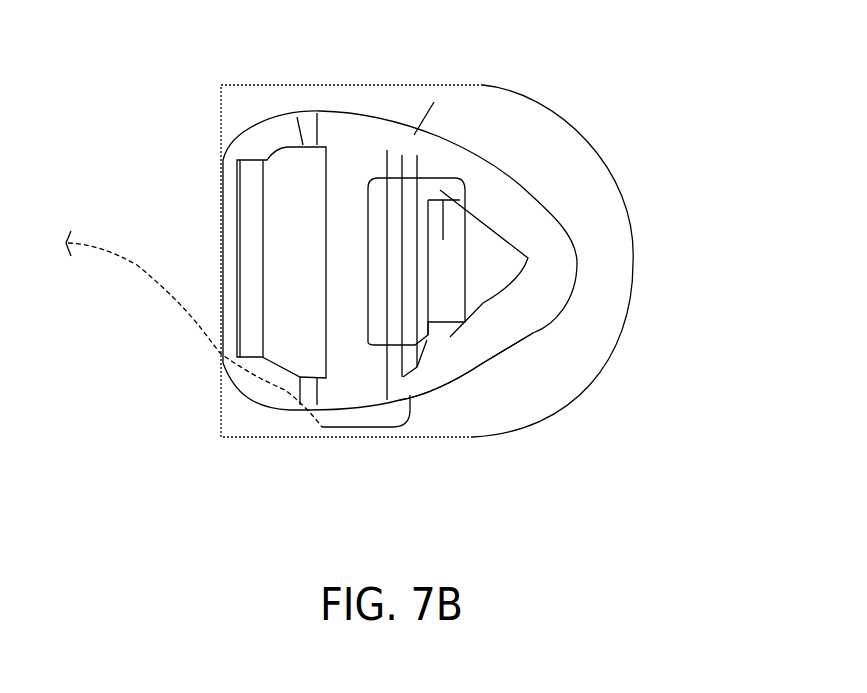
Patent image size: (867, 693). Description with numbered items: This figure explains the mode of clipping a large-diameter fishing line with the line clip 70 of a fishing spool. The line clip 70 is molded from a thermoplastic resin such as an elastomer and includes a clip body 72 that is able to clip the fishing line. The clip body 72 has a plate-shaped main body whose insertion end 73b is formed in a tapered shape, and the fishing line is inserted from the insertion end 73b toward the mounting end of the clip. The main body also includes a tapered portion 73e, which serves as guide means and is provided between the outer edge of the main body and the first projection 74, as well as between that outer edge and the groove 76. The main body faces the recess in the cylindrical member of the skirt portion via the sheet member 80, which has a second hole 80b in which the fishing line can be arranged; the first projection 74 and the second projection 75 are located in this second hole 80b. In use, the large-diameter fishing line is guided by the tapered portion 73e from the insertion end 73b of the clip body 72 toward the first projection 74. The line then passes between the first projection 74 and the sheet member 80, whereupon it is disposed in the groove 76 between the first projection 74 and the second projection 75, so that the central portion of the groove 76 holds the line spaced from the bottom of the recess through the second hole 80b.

The line clip 70 is at (245, 118).
The clip body 72 is at (495, 187).
The tapered portion 73e is at (557, 257).
The insertion end 73b is at (535, 333).
The first projection 74 is at (447, 318).
The second projection 75 is at (387, 188).
The groove 76 is at (413, 182).
The sheet member 80 is at (573, 112).
The second hole 80b is at (470, 237).